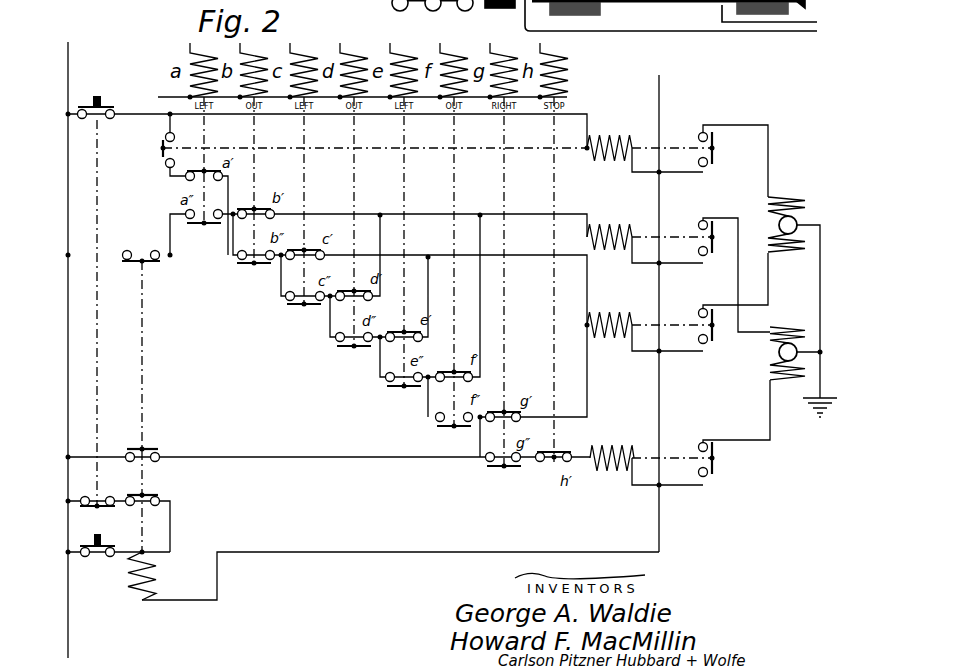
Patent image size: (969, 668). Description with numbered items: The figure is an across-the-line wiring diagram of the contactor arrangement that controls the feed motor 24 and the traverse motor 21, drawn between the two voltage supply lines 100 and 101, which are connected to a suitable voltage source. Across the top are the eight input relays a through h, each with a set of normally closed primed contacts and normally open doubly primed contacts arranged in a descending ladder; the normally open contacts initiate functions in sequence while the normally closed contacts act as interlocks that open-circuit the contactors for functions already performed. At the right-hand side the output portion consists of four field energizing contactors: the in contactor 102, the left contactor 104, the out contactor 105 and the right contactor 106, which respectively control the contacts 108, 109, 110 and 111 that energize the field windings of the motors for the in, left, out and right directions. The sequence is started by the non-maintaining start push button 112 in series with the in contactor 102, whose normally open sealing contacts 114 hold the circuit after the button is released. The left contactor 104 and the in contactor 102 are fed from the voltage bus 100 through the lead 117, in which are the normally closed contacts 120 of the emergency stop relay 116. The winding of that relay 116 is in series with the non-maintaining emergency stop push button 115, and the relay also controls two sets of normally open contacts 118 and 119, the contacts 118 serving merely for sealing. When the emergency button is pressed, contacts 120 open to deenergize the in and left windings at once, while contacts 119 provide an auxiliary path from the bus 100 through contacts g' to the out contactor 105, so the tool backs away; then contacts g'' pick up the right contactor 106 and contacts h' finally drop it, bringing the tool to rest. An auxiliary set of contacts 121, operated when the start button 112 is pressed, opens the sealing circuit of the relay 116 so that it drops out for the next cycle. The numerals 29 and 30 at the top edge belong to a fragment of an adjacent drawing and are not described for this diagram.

In FIG. 1, the machine element (FIG. 1 fragment) 29 is at (640, 12).
In FIG. 1, the machine element (FIG. 1 fragment) 30 is at (690, 6).
In FIG. 2, the voltage supply line 100 is at (69, 640).
In FIG. 2, the voltage supply line 101 is at (660, 521).
In FIG. 2, the in contactor 102 is at (617, 143).
In FIG. 2, the left contactor 104 is at (620, 231).
In FIG. 2, the out contactor 105 is at (620, 319).
In FIG. 2, the right contactor 106 is at (620, 450).
In FIG. 2, the contacts 108 is at (715, 151).
In FIG. 2, the contacts 109 is at (718, 228).
In FIG. 2, the contacts 110 is at (714, 336).
In FIG. 2, the contacts 111 is at (718, 468).
In FIG. 2, the start push button 112 is at (107, 124).
In FIG. 2, the sealing contacts 114 is at (161, 156).
In FIG. 2, the emergency stop push button 115 is at (115, 543).
In FIG. 2, the emergency stop relay 116 is at (135, 591).
In FIG. 2, the lead 117 is at (125, 252).
In FIG. 2, the sealing contacts 118 is at (164, 499).
In FIG. 2, the contacts 119 is at (151, 449).
In FIG. 2, the normally closed contacts 120 is at (150, 260).
In FIG. 2, the auxiliary contacts 121 is at (112, 494).
In FIG. 2, the traverse motor 21 is at (775, 363).
In FIG. 2, the feed motor 24 is at (804, 193).